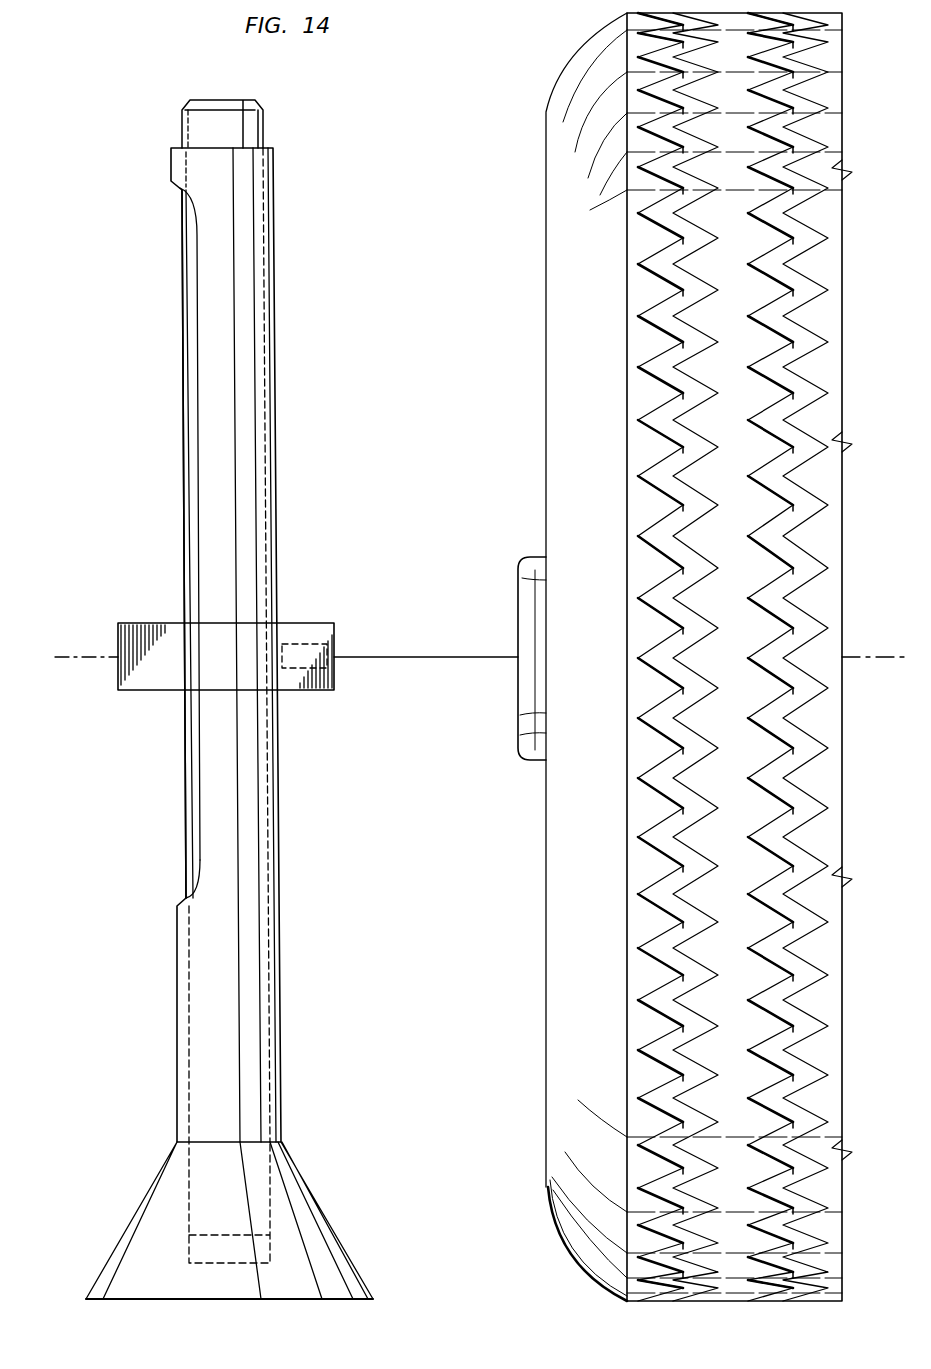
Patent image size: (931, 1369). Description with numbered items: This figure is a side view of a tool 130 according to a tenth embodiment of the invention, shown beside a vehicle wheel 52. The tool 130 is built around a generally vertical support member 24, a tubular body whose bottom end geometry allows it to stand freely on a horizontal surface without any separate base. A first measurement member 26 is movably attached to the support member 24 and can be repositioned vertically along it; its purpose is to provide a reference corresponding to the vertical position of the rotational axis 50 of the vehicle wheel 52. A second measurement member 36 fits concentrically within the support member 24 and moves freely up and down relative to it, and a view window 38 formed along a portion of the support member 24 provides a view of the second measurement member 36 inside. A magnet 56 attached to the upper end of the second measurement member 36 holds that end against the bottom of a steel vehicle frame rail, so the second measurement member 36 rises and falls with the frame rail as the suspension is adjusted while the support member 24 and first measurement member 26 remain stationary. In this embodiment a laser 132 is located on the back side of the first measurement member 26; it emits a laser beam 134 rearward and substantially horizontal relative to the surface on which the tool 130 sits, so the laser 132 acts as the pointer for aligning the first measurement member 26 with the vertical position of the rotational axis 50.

The support member 24 is at (275, 195).
The first measurement member 26 is at (150, 623).
The second measurement member 36 is at (181, 128).
The view window 38 is at (195, 256).
The rotational axis 50 is at (693, 657).
The vehicle wheel 52 is at (545, 350).
The magnet 56 is at (203, 98).
The tool 130 is at (220, 676).
The laser 132 is at (308, 643).
The laser beam 134 is at (415, 655).